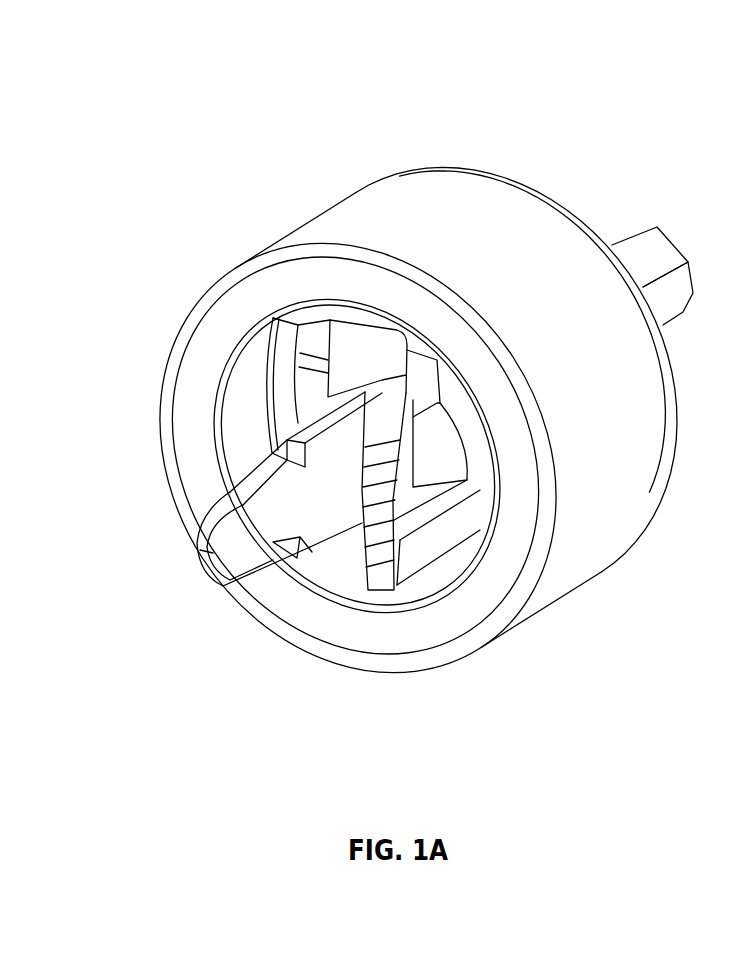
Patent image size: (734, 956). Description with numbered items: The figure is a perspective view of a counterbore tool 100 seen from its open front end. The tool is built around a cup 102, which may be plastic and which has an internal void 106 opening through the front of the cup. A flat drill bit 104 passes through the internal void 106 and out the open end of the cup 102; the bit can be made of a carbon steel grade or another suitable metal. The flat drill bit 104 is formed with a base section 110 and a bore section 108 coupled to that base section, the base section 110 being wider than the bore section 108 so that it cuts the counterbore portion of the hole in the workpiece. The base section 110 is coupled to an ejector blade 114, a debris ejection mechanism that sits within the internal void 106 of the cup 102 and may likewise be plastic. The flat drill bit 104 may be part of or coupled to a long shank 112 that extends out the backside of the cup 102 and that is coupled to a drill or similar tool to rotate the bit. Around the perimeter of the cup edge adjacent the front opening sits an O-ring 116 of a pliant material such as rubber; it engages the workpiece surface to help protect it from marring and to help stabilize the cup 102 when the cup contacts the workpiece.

The counterbore tool 100 is at (250, 157).
The cup 102 is at (410, 185).
The flat drill bit 104 is at (262, 440).
The internal void 106 is at (305, 335).
The bore section 108 is at (243, 498).
The base section 110 is at (312, 425).
The shank 112 is at (638, 228).
The ejector blade 114 is at (432, 553).
The O-ring 116 is at (372, 633).